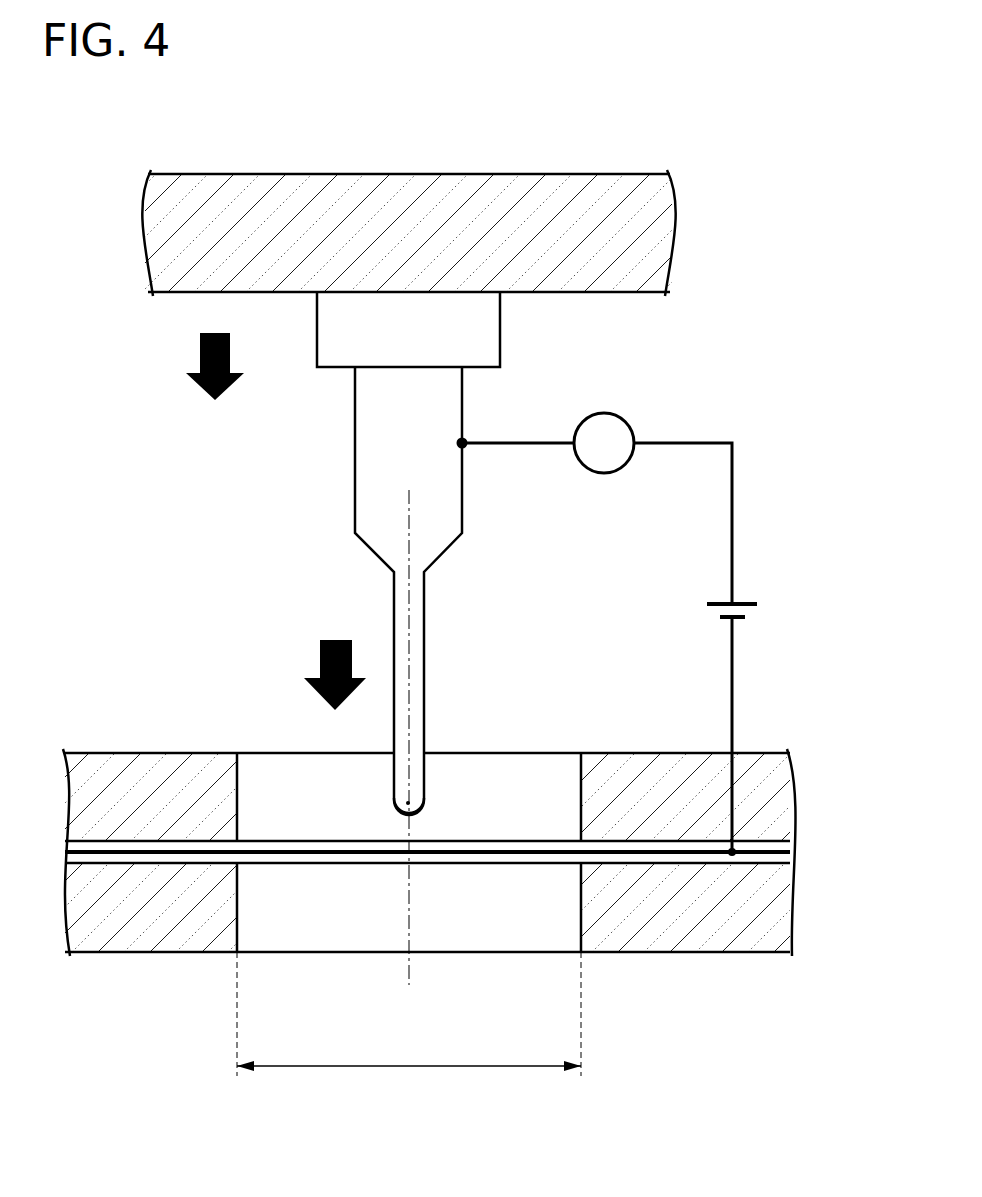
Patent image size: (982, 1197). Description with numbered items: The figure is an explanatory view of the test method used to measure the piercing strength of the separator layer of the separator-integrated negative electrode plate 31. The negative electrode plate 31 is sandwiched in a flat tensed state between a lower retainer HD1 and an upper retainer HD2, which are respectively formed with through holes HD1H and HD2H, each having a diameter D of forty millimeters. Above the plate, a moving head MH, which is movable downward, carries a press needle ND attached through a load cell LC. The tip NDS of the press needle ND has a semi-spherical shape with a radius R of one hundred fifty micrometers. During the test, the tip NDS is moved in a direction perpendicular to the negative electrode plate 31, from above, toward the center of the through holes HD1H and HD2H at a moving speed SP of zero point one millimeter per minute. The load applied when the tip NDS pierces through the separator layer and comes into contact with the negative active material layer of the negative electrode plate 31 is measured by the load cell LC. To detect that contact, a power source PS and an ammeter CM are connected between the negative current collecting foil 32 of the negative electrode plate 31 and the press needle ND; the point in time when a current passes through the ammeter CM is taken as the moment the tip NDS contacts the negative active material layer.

The moving head MH is at (660, 240).
The load cell LC is at (498, 338).
The press needle ND is at (360, 491).
The moving speed SP is at (335, 658).
The tip of press needle NDS is at (414, 817).
The radius R is at (407, 803).
The ammeter CM is at (627, 420).
The power source PS is at (722, 594).
The retainer HD2 is at (147, 778).
The through hole HD2H is at (572, 782).
The negative electrode plate 31 is at (498, 844).
The negative current collecting foil 32 is at (767, 857).
The retainer HD1 is at (136, 935).
The through hole HD1H is at (581, 918).
The diameter D is at (409, 1014).